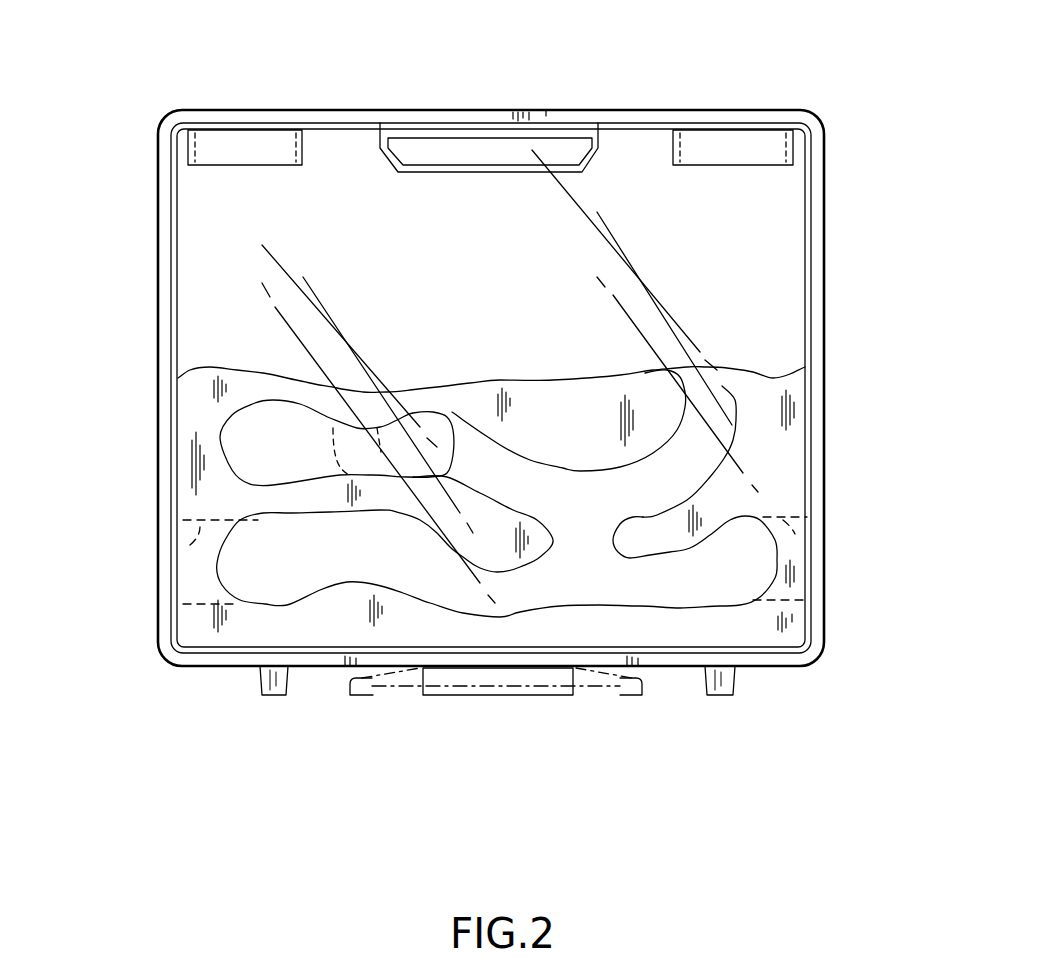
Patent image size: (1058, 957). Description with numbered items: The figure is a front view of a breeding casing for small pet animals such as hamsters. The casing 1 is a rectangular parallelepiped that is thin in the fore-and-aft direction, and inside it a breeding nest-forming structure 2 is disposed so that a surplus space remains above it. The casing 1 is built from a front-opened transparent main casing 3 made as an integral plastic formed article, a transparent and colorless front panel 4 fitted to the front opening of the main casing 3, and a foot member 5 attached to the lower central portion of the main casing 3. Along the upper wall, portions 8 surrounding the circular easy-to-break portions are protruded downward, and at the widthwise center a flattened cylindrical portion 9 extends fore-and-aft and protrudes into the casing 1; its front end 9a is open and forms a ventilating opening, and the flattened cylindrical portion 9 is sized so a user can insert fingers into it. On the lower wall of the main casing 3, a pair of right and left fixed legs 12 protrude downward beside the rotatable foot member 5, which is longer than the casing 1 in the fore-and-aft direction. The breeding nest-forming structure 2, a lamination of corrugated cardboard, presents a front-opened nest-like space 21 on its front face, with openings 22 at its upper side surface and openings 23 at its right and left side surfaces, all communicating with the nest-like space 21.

The casing 1 is at (740, 110).
The breeding nest-forming structure 2 is at (772, 460).
The main casing 3 is at (495, 70).
The front panel 4 is at (200, 272).
The foot member 5 is at (452, 693).
The portions 8 is at (270, 155).
The flattened cylindrical portion 9 is at (464, 174).
The front end 9a is at (510, 155).
The fixed legs 12 is at (264, 685).
The nest-like space 21 is at (663, 583).
The openings 22 is at (720, 392).
The openings 23 is at (205, 537).